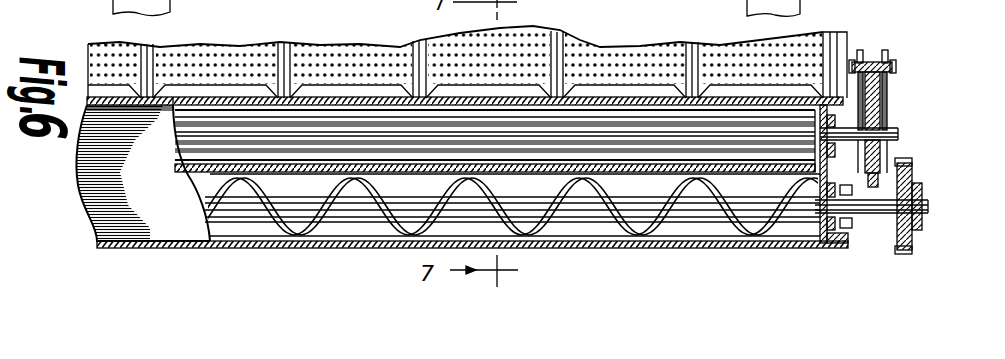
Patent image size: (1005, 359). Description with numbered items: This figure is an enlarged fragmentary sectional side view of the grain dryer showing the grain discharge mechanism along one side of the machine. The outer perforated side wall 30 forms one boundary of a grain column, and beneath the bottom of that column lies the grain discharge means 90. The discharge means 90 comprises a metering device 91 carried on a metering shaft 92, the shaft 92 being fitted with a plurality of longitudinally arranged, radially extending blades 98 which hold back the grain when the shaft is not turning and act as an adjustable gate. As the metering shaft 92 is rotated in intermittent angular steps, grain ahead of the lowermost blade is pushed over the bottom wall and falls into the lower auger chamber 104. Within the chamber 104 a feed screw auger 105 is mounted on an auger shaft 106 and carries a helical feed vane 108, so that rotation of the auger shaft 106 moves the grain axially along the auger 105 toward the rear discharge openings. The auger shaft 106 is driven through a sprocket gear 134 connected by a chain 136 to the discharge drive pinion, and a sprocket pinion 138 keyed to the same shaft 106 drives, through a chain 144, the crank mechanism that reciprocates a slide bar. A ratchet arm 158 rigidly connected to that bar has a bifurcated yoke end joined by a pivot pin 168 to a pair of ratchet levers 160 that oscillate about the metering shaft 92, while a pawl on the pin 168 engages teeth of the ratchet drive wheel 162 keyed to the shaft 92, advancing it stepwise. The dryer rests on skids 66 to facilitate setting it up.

The outer perforated side wall 30 is at (325, 52).
The grain discharge means 90 is at (808, 98).
The metering device 91 is at (635, 114).
The radially extending blades 98 is at (738, 160).
The lower auger chamber 104 is at (352, 225).
The feed screw auger 105 is at (596, 219).
The helical feed vane 108 is at (692, 190).
The chain 144 is at (848, 244).
The ratchet levers 160 is at (847, 140).
The skids 66 is at (873, 62).
The pivot pin 168 is at (897, 63).
The ratchet arm 158 is at (895, 76).
The ratchet drive wheel 162 is at (888, 105).
The metering shaft 92 is at (900, 135).
The auger shaft 106 is at (928, 205).
The sprocket gear 134 is at (912, 225).
The chain 136 is at (905, 250).
The sprocket pinion 138 is at (855, 218).